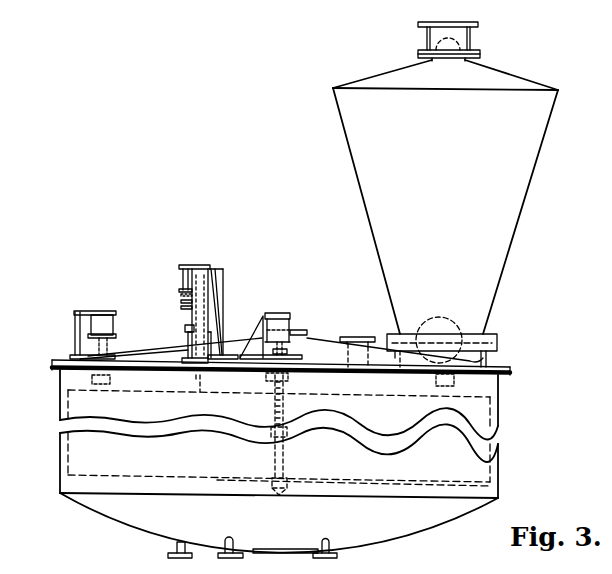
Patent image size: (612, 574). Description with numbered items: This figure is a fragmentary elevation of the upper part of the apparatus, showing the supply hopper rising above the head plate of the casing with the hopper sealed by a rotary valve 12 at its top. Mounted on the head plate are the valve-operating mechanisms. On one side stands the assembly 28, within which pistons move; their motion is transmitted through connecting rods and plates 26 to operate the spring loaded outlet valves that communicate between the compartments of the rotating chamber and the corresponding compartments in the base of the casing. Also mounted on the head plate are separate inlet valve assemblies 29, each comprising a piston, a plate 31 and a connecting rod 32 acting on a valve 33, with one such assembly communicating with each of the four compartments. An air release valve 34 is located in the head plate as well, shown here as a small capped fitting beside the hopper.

The rotary valve 12 is at (472, 37).
The plates 26 is at (62, 379).
The assembly 28 is at (90, 313).
The inlet valve assemblies 29 is at (200, 265).
The plates 31 is at (223, 303).
The connecting rods 32 is at (183, 318).
The valves 33 is at (199, 395).
The air release valve 34 is at (345, 336).